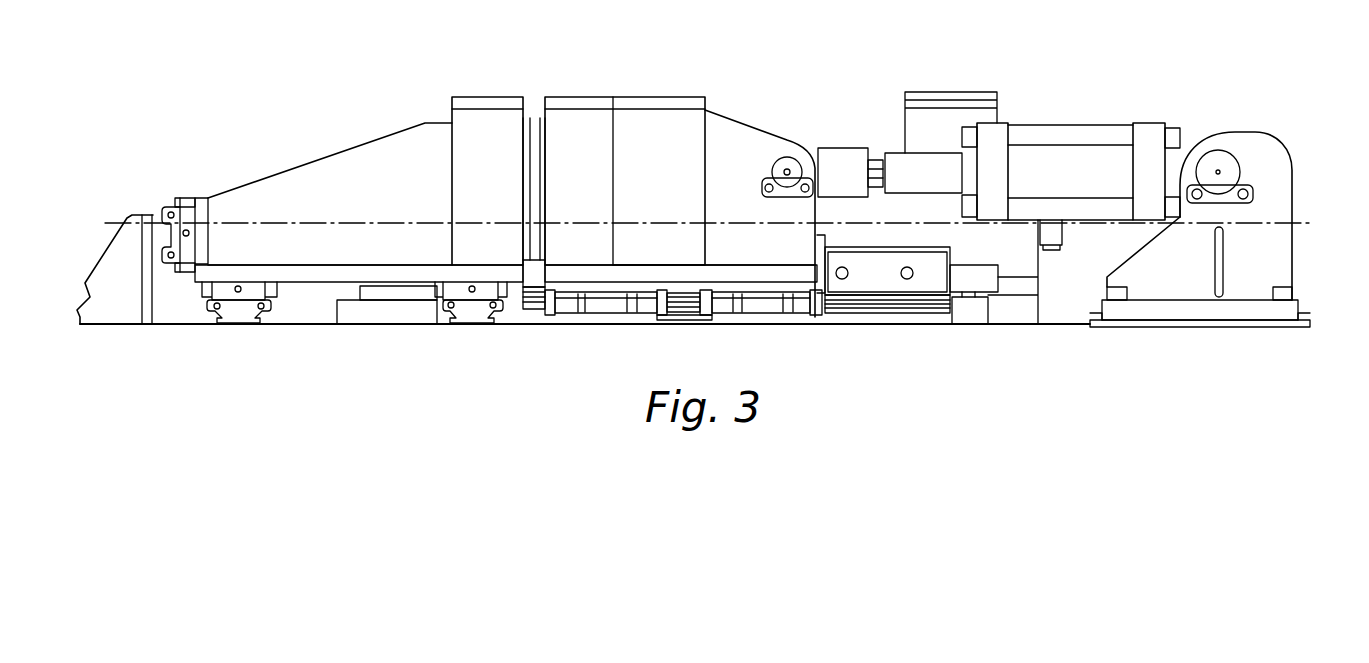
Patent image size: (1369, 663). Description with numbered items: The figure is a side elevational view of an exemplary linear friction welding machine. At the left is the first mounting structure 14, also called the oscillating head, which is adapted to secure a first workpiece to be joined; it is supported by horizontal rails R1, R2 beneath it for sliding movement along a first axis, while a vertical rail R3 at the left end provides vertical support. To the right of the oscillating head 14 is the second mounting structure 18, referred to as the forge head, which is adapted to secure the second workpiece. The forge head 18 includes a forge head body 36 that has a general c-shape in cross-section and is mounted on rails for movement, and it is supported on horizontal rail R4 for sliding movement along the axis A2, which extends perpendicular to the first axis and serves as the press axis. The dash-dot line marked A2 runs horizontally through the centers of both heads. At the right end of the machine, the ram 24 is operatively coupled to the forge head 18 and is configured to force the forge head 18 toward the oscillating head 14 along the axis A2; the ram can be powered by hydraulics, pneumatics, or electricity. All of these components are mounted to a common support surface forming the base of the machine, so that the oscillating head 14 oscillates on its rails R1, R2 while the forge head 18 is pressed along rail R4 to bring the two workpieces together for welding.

The first mounting structure 14 is at (372, 170).
The second mounting structure 18 is at (703, 170).
The second ram 24 is at (1062, 170).
The forge head body 36 is at (577, 146).
The horizontal rail R1 is at (234, 312).
The horizontal rail R2 is at (469, 308).
The vertical rail R3 is at (162, 233).
The horizontal rail R4 is at (892, 305).
The axis A2 is at (709, 224).